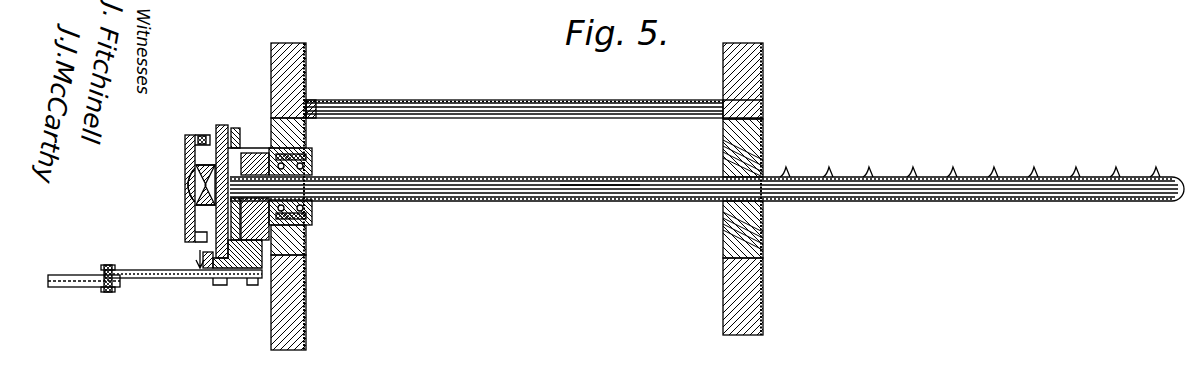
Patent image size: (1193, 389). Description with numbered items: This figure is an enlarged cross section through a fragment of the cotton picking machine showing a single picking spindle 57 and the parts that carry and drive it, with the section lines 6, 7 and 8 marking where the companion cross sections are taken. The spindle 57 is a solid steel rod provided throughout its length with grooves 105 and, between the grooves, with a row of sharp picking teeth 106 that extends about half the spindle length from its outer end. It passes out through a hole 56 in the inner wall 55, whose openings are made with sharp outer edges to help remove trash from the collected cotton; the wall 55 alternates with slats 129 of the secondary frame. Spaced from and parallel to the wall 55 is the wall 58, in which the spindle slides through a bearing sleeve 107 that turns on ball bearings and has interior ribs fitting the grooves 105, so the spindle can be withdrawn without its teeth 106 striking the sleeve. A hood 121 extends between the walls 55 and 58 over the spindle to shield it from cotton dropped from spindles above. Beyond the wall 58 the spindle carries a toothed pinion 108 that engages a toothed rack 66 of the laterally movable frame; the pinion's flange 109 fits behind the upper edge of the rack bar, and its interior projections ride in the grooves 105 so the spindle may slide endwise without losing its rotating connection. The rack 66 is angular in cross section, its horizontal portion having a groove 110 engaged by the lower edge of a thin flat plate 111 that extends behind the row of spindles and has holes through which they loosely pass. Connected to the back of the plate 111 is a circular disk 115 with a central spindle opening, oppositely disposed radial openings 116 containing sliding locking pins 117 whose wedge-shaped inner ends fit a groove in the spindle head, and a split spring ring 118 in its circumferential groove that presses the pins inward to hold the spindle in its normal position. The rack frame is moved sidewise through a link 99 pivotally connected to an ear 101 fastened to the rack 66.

The wall 55 is at (766, 84).
The holes 56 is at (766, 166).
The picking spindle 57 is at (594, 178).
The wall 58 is at (308, 295).
The toothed rack 66 is at (300, 239).
The link 99 is at (72, 289).
The ear 101 is at (125, 268).
The grooves 105 is at (488, 192).
The picking teeth 106 is at (1027, 174).
The bearing sleeve 107 is at (313, 170).
The toothed pinion 108 is at (215, 151).
The flange 109 is at (229, 132).
The groove 110 is at (198, 257).
The flat plate 111 is at (212, 278).
The circular disk 115 is at (188, 152).
The radial openings 116 is at (184, 213).
The locking pin 117 is at (200, 221).
The split spring ring 118 is at (200, 135).
The hood 121 is at (509, 91).
The slats 129 is at (725, 78).
The section line 6- 6 is at (201, 125).
The section line 7- 7 is at (262, 148).
The section line 8- 8 is at (300, 43).